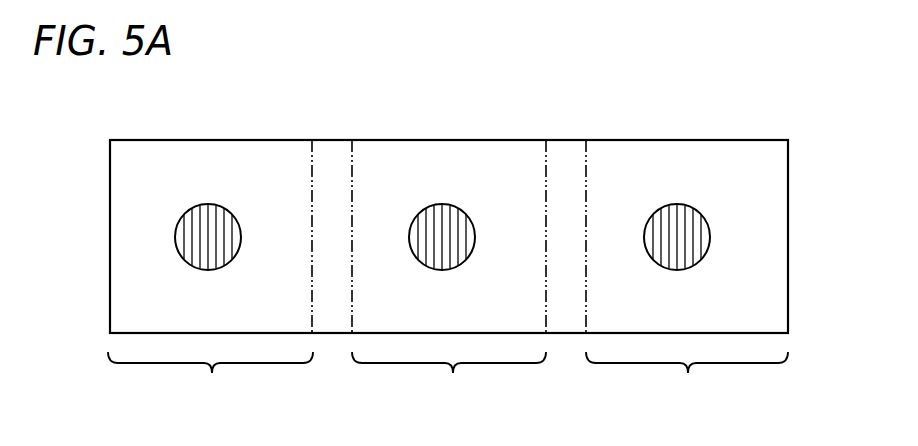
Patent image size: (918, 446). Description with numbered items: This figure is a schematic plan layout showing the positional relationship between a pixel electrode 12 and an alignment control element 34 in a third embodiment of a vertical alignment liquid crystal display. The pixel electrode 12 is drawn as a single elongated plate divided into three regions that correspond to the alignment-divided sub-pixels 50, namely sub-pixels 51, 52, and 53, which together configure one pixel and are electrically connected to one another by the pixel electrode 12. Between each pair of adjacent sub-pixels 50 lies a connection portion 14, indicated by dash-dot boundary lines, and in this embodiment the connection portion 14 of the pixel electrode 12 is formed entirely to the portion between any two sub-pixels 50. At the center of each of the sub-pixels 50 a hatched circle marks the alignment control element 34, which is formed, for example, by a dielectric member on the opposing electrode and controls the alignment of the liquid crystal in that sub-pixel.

The pixel electrode 12 is at (768, 158).
The connection portion 14 is at (330, 157).
The alignment control element 34 is at (690, 237).
The sub-pixels 50 is at (448, 382).
The sub-pixel 51 is at (210, 382).
The sub-pixel 52 is at (449, 382).
The sub-pixel 53 is at (687, 382).